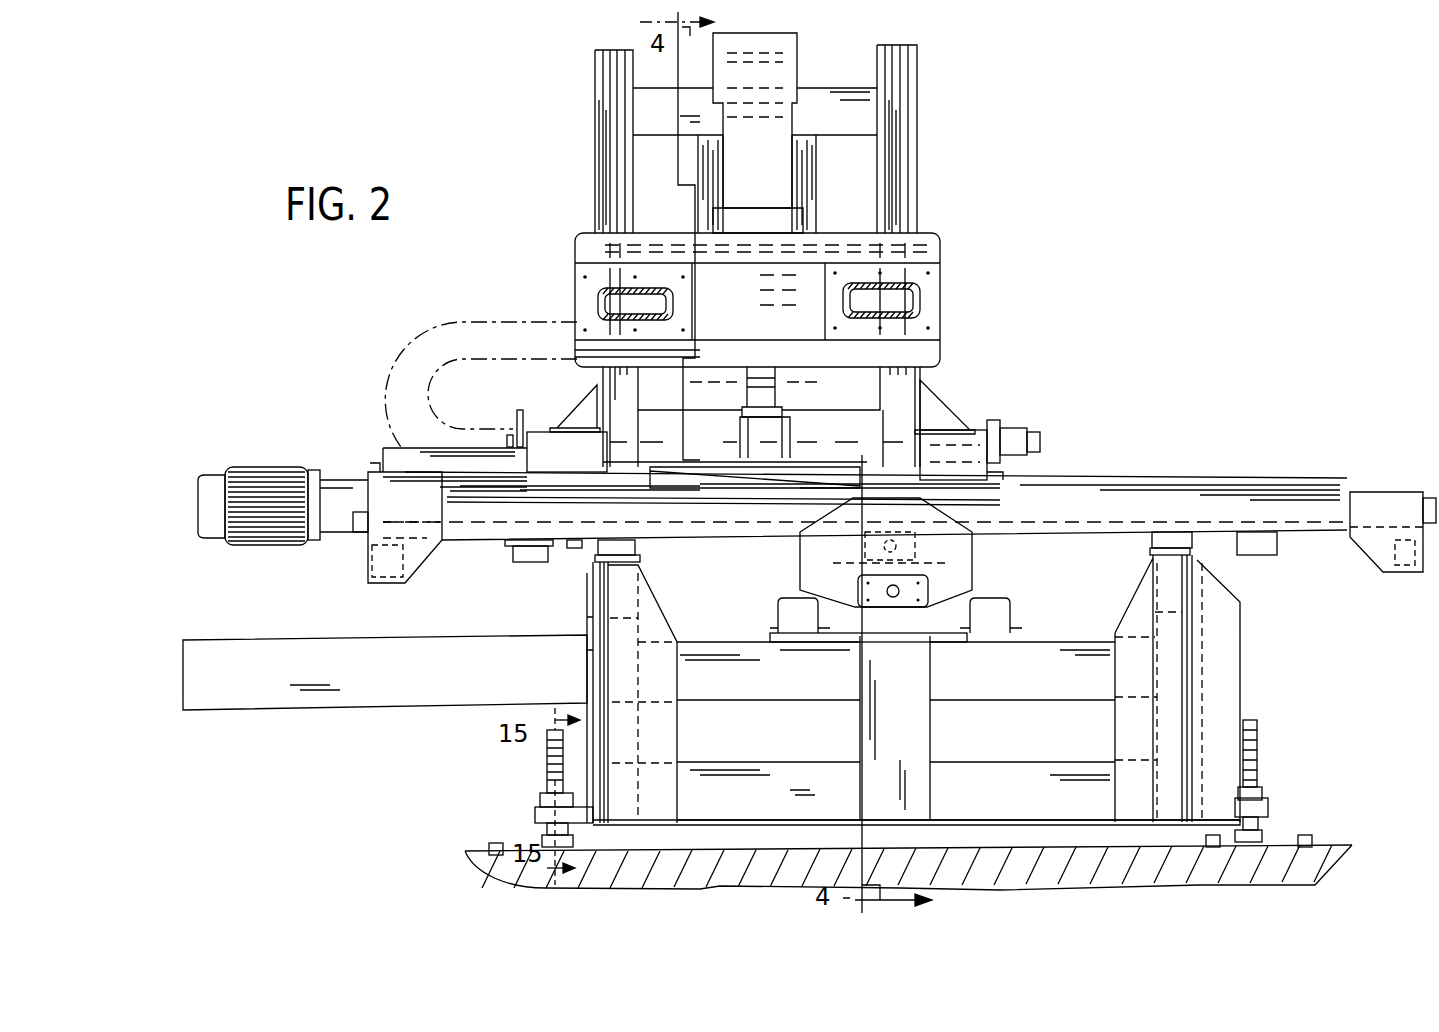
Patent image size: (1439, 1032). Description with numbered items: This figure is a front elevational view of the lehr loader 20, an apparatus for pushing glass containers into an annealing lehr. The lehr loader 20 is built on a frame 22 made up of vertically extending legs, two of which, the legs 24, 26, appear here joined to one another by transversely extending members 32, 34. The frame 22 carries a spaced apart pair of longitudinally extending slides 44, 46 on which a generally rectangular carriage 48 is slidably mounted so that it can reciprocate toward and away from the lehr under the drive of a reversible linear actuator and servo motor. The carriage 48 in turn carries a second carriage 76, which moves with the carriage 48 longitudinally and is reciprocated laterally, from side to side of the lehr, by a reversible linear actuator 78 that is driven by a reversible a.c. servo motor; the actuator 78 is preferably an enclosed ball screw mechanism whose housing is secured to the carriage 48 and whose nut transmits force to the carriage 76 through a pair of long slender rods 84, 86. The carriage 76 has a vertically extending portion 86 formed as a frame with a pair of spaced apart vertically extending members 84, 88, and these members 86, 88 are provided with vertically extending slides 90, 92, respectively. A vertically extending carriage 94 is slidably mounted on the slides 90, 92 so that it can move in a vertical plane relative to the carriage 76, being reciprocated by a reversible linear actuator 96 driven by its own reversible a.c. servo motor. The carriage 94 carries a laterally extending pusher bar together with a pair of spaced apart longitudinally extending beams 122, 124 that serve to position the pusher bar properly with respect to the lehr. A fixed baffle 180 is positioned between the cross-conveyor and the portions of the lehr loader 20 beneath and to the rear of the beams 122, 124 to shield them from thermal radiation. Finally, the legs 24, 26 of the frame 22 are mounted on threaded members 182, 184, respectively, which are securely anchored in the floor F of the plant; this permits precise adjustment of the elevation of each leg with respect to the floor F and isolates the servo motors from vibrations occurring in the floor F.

The lehr loader 20 is at (1005, 279).
The frame 22 is at (1300, 658).
The leg 24 is at (1223, 693).
The leg 26 is at (537, 708).
The transversely extending member 32 is at (1037, 660).
The transversely extending member 34 is at (1000, 785).
The longitudinally extending slide 44 is at (1190, 545).
The longitudinally extending slide 46 is at (596, 550).
The carriage 48 is at (1118, 505).
The carriage 76 is at (905, 388).
The reversible linear actuator 78 is at (345, 540).
The rod 84 is at (953, 490).
The vertically extending portion 86 is at (905, 45).
The vertically extending member 88 is at (595, 47).
The vertically extending slide 90 is at (900, 183).
The vertically extending slide 92 is at (612, 182).
The vertically extending carriage 94 is at (940, 243).
The reversible linear actuator 96 is at (793, 47).
The longitudinally extending beam 122 is at (920, 300).
The longitudinally extending beam 124 is at (585, 303).
The fixed baffle 180 is at (268, 470).
The threaded member 182 is at (1253, 747).
The threaded member 184 is at (545, 775).
The floor F is at (1327, 845).